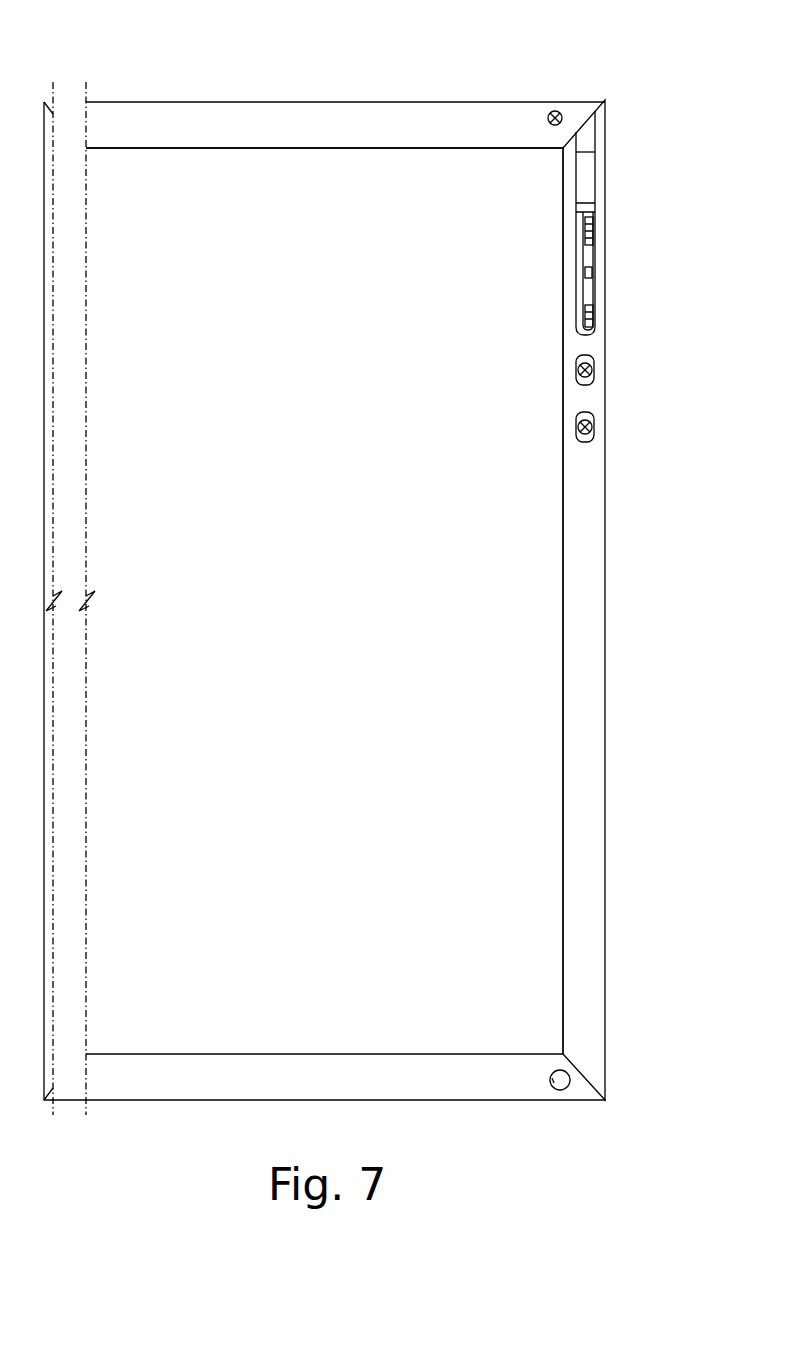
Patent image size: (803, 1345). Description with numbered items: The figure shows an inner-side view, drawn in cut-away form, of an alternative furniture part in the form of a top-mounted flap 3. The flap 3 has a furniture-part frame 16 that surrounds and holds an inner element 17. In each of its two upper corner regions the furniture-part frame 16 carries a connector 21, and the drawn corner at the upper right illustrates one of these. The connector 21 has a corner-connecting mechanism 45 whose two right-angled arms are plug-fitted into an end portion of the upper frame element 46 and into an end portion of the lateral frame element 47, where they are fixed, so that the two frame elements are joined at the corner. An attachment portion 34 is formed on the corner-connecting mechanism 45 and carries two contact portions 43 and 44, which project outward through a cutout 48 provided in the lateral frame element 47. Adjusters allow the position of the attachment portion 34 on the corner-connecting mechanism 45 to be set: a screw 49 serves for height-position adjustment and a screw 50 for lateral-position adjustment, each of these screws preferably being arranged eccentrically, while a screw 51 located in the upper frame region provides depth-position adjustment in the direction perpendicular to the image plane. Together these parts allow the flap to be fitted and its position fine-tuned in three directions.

The top-mounted flap 3 is at (262, 88).
The furniture-part frame 16 is at (331, 92).
The upper frame element 46 is at (405, 113).
The inner element 17 is at (312, 602).
The connector 21 is at (606, 92).
The lateral frame element 47 is at (588, 497).
The screw 51 is at (556, 110).
The cutout 48 is at (597, 180).
The corner-connecting mechanism 45 is at (590, 160).
The contact portion 44 is at (590, 228).
The attachment portion 34 is at (611, 267).
The contact portion 43 is at (592, 318).
The screw 50 is at (592, 370).
The screw 49 is at (594, 427).